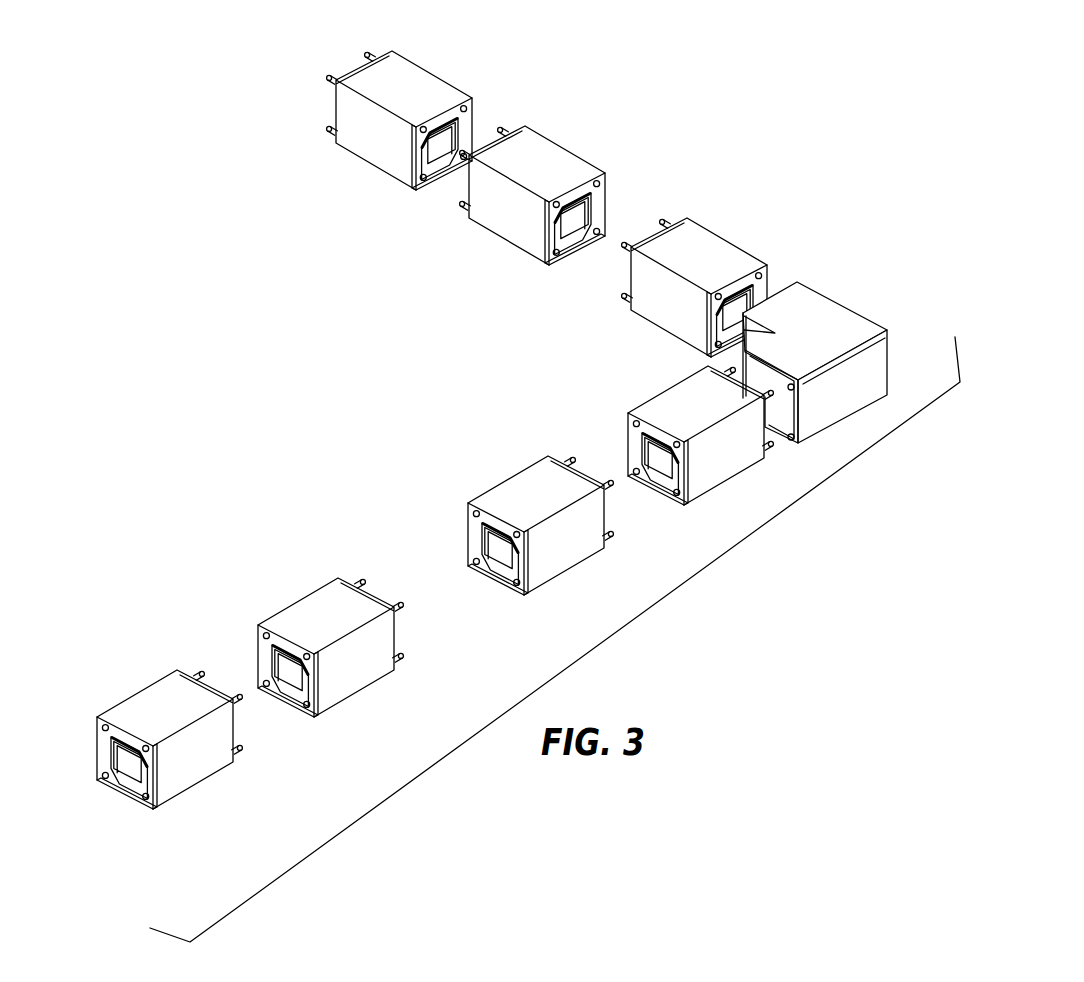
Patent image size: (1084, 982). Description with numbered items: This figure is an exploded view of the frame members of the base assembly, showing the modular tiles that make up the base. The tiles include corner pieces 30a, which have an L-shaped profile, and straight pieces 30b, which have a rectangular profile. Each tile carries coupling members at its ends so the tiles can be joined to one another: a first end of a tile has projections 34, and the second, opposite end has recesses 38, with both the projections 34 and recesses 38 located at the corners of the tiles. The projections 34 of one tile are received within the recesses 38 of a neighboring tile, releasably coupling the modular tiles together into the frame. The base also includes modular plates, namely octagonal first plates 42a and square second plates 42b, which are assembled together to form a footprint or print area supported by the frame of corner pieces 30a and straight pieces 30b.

The corner piece 30a is at (807, 318).
The straight piece 30b is at (410, 92).
The projection 34 is at (358, 580).
The recess 38 is at (607, 227).
The first plate 42a is at (108, 744).
The second plate 42b is at (108, 782).